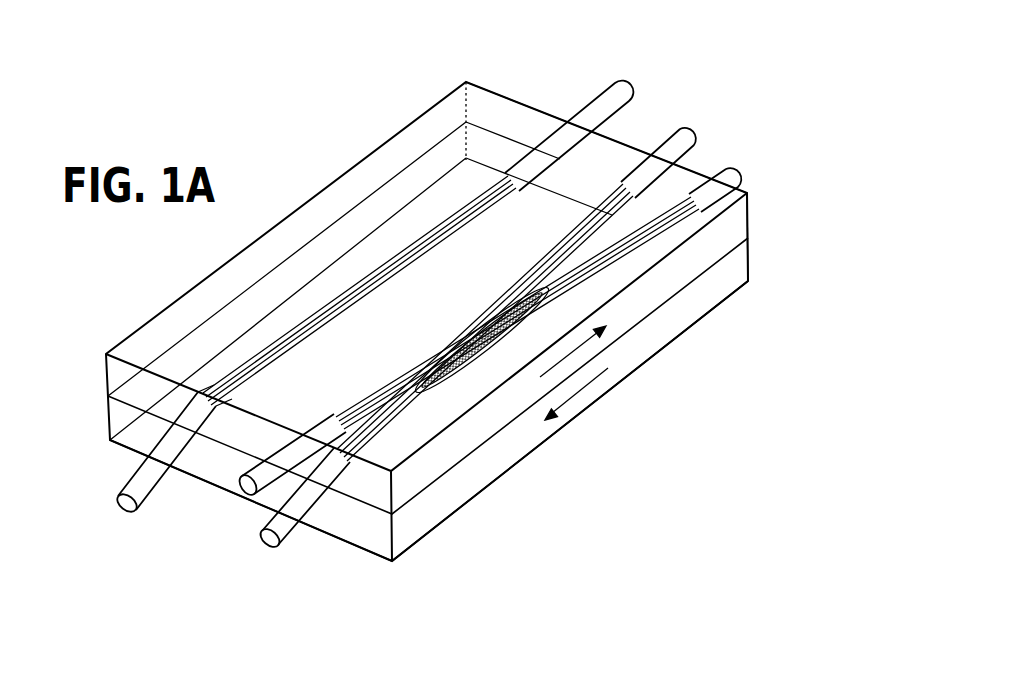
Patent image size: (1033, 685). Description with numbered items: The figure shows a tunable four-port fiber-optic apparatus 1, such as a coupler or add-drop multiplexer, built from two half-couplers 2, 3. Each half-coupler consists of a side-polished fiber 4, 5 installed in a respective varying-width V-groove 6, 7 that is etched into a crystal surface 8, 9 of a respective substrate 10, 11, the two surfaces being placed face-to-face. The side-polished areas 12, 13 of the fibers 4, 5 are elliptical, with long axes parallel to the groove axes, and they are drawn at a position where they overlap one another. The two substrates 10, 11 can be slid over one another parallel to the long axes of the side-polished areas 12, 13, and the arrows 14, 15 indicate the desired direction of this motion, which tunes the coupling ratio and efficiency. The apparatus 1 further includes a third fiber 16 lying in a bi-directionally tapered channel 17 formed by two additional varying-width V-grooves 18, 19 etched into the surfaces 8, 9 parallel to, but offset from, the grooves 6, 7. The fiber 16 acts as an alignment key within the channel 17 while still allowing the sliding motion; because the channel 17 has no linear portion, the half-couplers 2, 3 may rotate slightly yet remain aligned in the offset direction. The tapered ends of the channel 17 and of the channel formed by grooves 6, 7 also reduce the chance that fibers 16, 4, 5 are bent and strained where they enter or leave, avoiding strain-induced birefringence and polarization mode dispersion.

The tunable 4-port fiber-optic apparatus 1 is at (712, 34).
The half-coupler 2 is at (760, 217).
The half-coupler 3 is at (762, 260).
The side-polished fiber 4 is at (688, 138).
The side-polished fiber 5 is at (732, 178).
The varying-width V-groove 6 is at (355, 480).
The varying-width V-groove 7 is at (322, 486).
The 100 crystal surface 8 is at (665, 320).
The 100 crystal surface 9 is at (517, 313).
The substrate 10 is at (755, 202).
The substrate 11 is at (750, 270).
The side-polished area 12 is at (492, 345).
The side-polished area 13 is at (482, 340).
The arrow 14 is at (577, 347).
The arrow 15 is at (577, 392).
The third fiber 16 is at (627, 78).
The bi-directionally tapered channel 17 is at (422, 292).
The varying-width V-groove 18 is at (192, 412).
The varying-width V-groove 19 is at (148, 455).